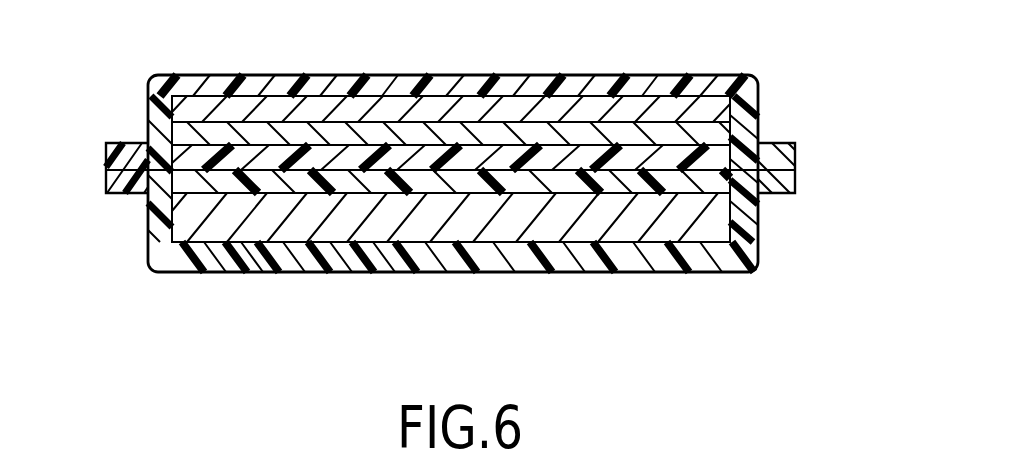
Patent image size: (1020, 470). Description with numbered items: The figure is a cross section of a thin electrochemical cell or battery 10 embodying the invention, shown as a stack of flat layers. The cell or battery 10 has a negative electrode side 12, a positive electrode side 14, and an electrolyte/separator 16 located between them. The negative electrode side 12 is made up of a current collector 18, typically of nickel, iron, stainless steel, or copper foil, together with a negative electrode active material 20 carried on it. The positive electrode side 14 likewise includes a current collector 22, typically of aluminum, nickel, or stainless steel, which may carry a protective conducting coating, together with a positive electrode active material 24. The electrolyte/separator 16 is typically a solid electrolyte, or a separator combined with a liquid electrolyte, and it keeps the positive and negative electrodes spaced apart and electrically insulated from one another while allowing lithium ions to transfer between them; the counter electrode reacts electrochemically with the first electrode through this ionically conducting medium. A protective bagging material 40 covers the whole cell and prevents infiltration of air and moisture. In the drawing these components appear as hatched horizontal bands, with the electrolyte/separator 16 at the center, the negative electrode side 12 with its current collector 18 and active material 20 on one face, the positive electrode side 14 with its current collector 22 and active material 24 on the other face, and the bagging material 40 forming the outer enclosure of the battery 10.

The electrochemical cell or battery 10 is at (774, 69).
The negative electrode side 12 is at (407, 92).
The positive electrode side 14 is at (292, 248).
The electrolyte/separator 16 is at (705, 143).
The current collector 18 is at (567, 107).
The negative electrode active material 20 is at (185, 136).
The current collector 22 is at (188, 218).
The positive electrode active material 24 is at (703, 187).
The protective bagging material 40 is at (737, 265).